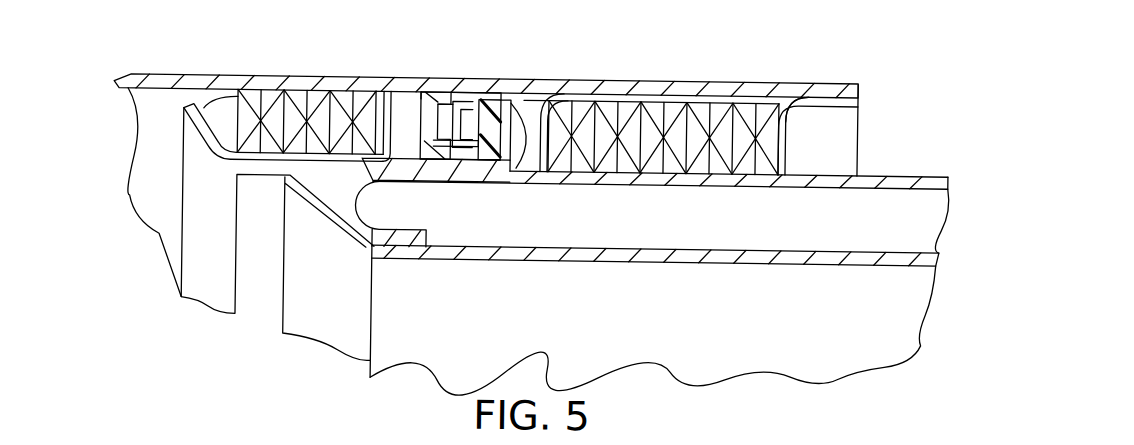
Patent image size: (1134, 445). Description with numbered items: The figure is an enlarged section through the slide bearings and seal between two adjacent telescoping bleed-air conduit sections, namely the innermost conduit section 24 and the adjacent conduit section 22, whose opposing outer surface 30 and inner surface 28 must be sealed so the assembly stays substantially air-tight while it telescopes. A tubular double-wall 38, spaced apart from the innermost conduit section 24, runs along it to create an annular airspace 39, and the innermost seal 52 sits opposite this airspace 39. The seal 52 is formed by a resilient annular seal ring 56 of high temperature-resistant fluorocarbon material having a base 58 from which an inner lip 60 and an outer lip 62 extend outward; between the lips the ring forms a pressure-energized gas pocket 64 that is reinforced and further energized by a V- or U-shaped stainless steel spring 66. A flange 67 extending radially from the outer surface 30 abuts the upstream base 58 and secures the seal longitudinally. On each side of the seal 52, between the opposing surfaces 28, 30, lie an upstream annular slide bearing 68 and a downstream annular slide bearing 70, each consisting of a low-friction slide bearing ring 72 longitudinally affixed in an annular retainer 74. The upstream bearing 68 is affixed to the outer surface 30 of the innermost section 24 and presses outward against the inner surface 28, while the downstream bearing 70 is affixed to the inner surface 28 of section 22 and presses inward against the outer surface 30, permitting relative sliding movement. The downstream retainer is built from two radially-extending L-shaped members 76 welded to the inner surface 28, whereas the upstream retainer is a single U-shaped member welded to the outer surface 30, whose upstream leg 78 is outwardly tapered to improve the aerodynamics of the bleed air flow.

The conduit section 22 is at (808, 78).
The innermost conduit section 24 is at (718, 181).
The inner surface 28 is at (113, 87).
The outer surface 30 is at (912, 166).
The tubular double-wall 38 is at (860, 258).
The annular airspace 39 is at (917, 224).
The innermost seal 52 is at (465, 96).
The seal ring 56 is at (495, 100).
The base 58 is at (518, 150).
The inner lip 60 is at (403, 161).
The outer lip 62 is at (402, 98).
The gas pocket 64 is at (437, 121).
The spring 66 is at (455, 148).
The flange 67 is at (528, 118).
The upstream annular slide bearing 68 is at (270, 136).
The downstream annular slide bearing 70 is at (650, 135).
The slide bearing ring 72 is at (225, 150).
The annular retainer 74 is at (200, 152).
The L-shaped members 76 is at (779, 136).
The upstream leg 78 is at (158, 101).